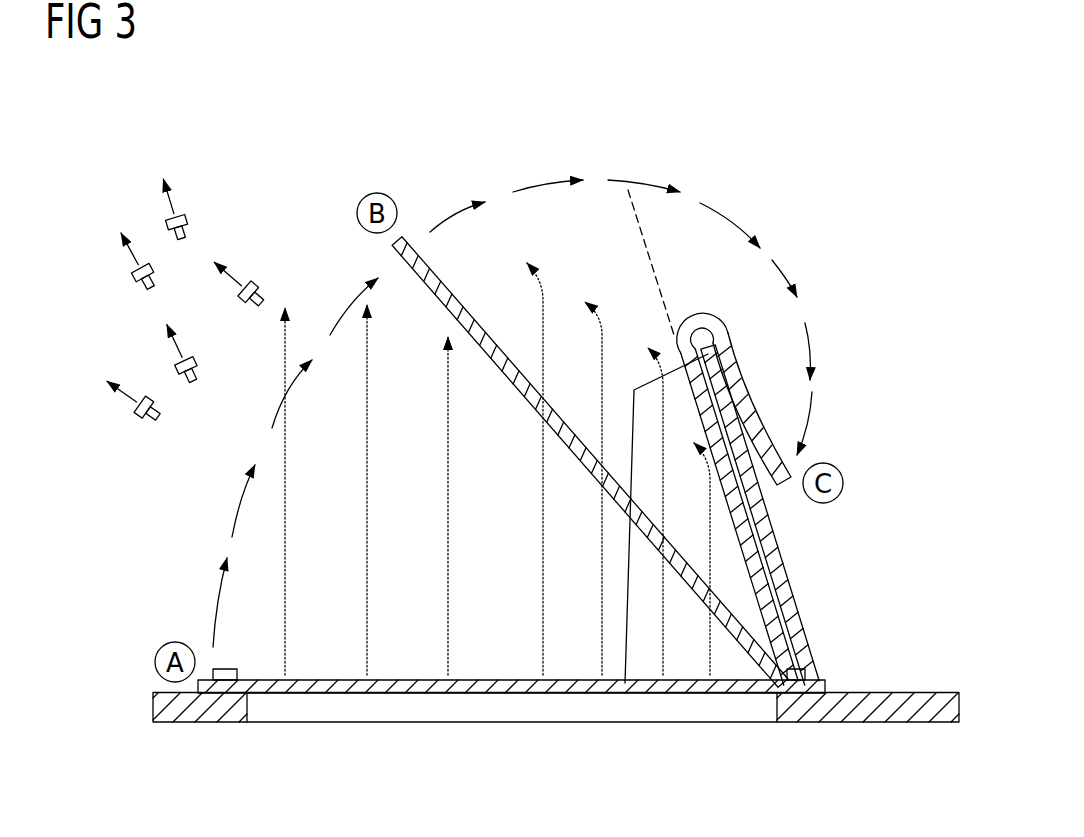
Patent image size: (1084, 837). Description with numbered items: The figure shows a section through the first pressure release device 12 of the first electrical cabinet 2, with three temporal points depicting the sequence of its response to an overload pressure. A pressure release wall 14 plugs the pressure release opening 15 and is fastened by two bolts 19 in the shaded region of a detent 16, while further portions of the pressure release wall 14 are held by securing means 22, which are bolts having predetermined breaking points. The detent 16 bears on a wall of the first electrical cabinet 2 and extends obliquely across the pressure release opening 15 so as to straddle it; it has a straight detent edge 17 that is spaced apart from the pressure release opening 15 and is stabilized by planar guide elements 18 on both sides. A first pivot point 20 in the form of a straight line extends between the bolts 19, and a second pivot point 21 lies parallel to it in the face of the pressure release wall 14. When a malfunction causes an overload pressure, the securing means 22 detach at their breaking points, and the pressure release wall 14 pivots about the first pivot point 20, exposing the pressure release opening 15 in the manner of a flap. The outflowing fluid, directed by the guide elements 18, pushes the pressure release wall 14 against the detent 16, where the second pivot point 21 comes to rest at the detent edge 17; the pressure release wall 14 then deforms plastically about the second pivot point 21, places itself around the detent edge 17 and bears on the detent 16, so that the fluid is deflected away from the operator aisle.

The first electrical cabinet 2 is at (888, 715).
The first pressure release device 12 is at (547, 138).
The pressure release wall 14 is at (468, 693).
The pressure release opening 15 is at (675, 722).
The detent 16 is at (777, 535).
The detent edge 17 is at (722, 324).
The guide elements 18 is at (662, 365).
The bolts 19 is at (805, 668).
The first pivot point 20 is at (792, 712).
The second pivot point 21 is at (484, 352).
The securing means 22 is at (192, 220).